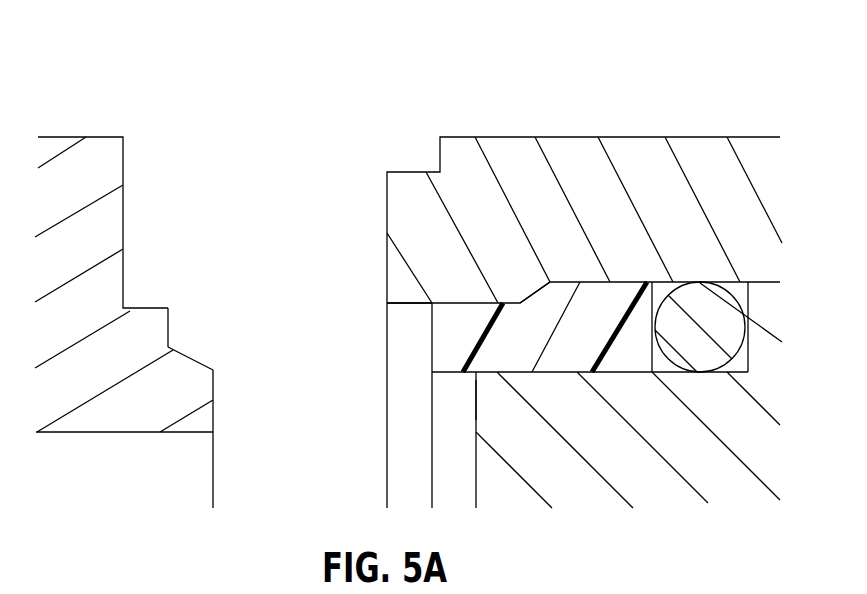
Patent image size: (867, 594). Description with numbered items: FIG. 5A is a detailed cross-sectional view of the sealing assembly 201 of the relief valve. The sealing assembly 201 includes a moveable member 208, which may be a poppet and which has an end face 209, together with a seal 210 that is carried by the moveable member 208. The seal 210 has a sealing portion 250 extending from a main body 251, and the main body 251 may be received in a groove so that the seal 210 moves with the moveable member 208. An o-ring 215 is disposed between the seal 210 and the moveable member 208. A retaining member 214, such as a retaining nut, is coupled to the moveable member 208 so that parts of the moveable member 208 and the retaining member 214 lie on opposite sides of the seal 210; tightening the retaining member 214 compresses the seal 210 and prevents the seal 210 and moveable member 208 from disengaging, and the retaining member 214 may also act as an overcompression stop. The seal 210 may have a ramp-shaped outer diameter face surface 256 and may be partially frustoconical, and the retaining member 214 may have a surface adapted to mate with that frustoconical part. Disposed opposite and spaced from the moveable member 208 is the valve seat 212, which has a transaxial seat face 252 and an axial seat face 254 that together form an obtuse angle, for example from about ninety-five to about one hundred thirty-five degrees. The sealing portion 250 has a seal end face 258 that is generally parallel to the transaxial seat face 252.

The sealing assembly 201 is at (352, 97).
The valve seat 212 is at (95, 258).
The transaxial seat face 252 is at (154, 338).
The axial seat face 254 is at (178, 368).
The seal end face 258 is at (415, 330).
The sealing portion 250 is at (455, 330).
The outer diameter face surface 256 is at (525, 284).
The retaining member 214 is at (573, 250).
The main body 251 is at (600, 313).
The seal 210 is at (537, 346).
The o-ring 215 is at (712, 332).
The moveable member 208 is at (598, 426).
The end face 209 is at (488, 406).